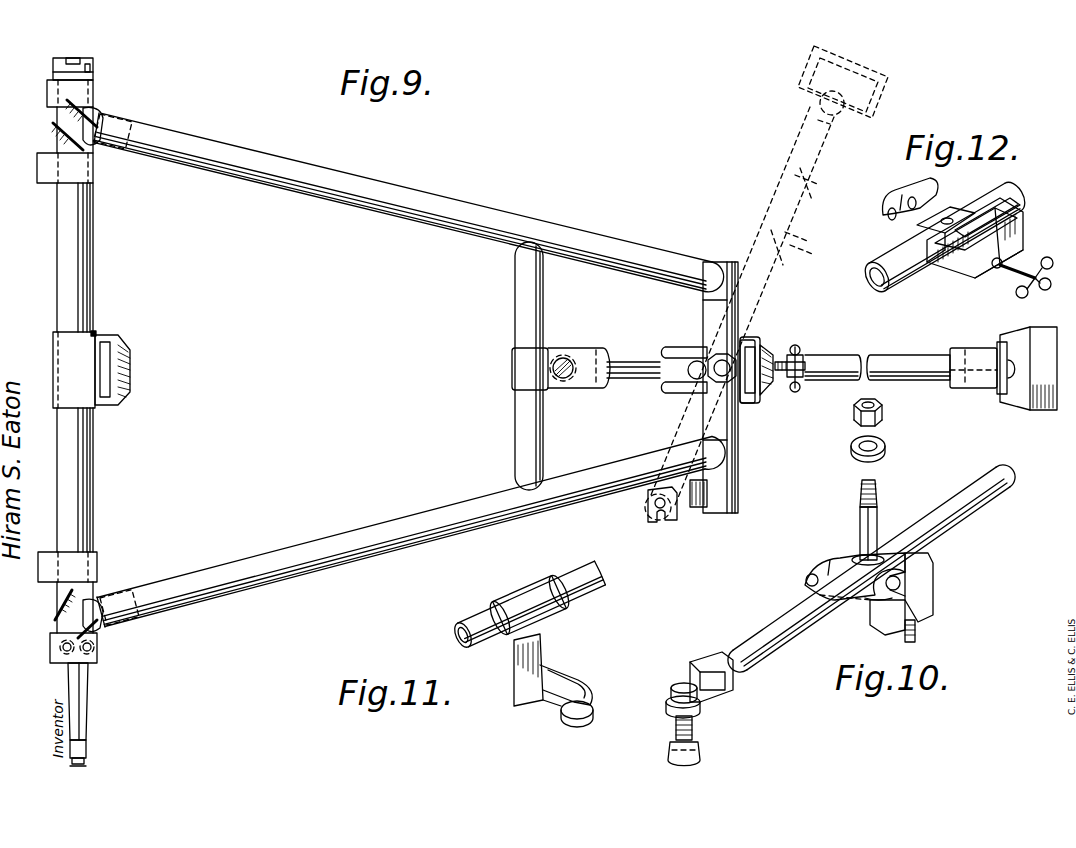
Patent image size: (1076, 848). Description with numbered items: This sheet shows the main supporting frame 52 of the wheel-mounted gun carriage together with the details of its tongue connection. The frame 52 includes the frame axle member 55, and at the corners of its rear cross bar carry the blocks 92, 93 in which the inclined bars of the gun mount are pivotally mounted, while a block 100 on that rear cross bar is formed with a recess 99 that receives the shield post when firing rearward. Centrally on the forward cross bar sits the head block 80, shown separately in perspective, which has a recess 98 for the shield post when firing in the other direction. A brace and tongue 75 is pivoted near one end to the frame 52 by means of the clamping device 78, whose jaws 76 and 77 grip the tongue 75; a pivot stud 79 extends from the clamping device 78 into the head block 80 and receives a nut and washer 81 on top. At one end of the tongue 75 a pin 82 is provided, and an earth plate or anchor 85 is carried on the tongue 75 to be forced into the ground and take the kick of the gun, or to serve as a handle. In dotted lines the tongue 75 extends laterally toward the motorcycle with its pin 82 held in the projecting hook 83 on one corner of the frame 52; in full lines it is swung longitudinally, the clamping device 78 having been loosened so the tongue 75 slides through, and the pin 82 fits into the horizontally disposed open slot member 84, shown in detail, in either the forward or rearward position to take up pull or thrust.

In FIG. 9, the frame 52 is at (515, 288).
In FIG. 11, the frame 52 is at (583, 580).
In FIG. 9, the frame axle member 55 is at (87, 471).
In FIG. 9, the brace and tongue 75 is at (758, 313).
In FIG. 10, the brace and tongue 75 is at (957, 500).
In FIG. 10, the jaw 76 is at (933, 545).
In FIG. 10, the jaw 77 is at (863, 598).
In FIG. 10, the clamping device 78 is at (860, 551).
In FIG. 10, the pivot stud 79 is at (870, 517).
In FIG. 9, the head block 80 is at (740, 405).
In FIG. 12, the head block 80 is at (956, 245).
In FIG. 9, the nut and washer 81 is at (709, 356).
In FIG. 9, the pin 82 is at (570, 381).
In FIG. 10, the pin 82 is at (703, 714).
In FIG. 9, the projecting hook 83 is at (700, 502).
In FIG. 9, the open slot member 84 is at (590, 380).
In FIG. 11, the open slot member 84 is at (565, 683).
In FIG. 9, the earth plate or anchor 85 is at (880, 101).
In FIG. 9, the block 92 is at (56, 624).
In FIG. 9, the block 93 is at (54, 146).
In FIG. 9, the recess 98 is at (754, 400).
In FIG. 12, the recess 98 is at (990, 227).
In FIG. 9, the recess 99 is at (108, 362).
In FIG. 9, the block 100 is at (95, 334).